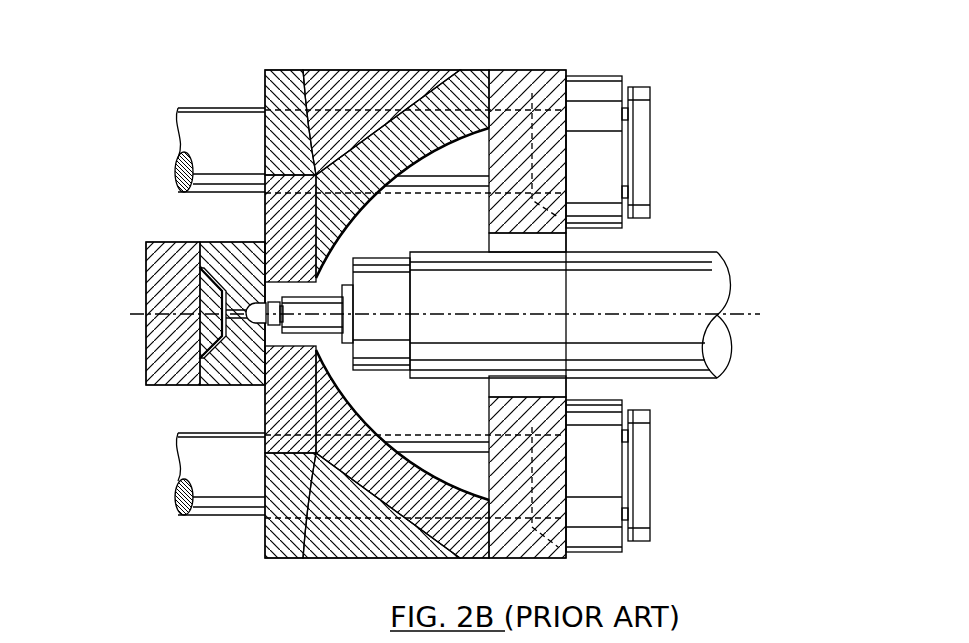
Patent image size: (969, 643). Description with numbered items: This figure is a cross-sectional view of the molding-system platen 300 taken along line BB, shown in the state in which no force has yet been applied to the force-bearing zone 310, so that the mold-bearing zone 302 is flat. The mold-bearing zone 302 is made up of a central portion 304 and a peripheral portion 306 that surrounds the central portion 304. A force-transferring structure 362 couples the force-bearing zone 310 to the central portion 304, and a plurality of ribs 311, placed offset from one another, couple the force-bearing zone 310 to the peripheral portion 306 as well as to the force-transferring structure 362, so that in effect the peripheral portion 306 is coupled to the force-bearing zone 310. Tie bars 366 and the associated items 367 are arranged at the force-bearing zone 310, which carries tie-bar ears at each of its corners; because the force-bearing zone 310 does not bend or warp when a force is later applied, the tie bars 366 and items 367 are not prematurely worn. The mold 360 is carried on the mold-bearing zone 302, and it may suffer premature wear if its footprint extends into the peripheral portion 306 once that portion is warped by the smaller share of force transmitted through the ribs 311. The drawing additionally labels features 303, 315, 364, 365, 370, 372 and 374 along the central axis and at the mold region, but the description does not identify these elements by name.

The molding-system platen 300 is at (737, 102).
The mold-bearing zone 302 is at (262, 542).
The nozzle passage 303 is at (210, 298).
The central portion 304 is at (290, 398).
The peripheral portion 306 is at (277, 90).
The force-bearing zone 310 is at (545, 558).
The ribs 311 is at (343, 90).
The hidden bore 315 is at (512, 97).
The mold 360 is at (147, 345).
The force-transferring structure 362 is at (400, 140).
The syringe barrel 364 is at (708, 266).
The syringe adapter 365 is at (553, 243).
The tie bars 366 is at (212, 128).
The items 367 is at (587, 93).
The nozzle block first portion 370 is at (160, 248).
The nozzle block second portion 372 is at (220, 248).
The nozzle tip 374 is at (282, 288).